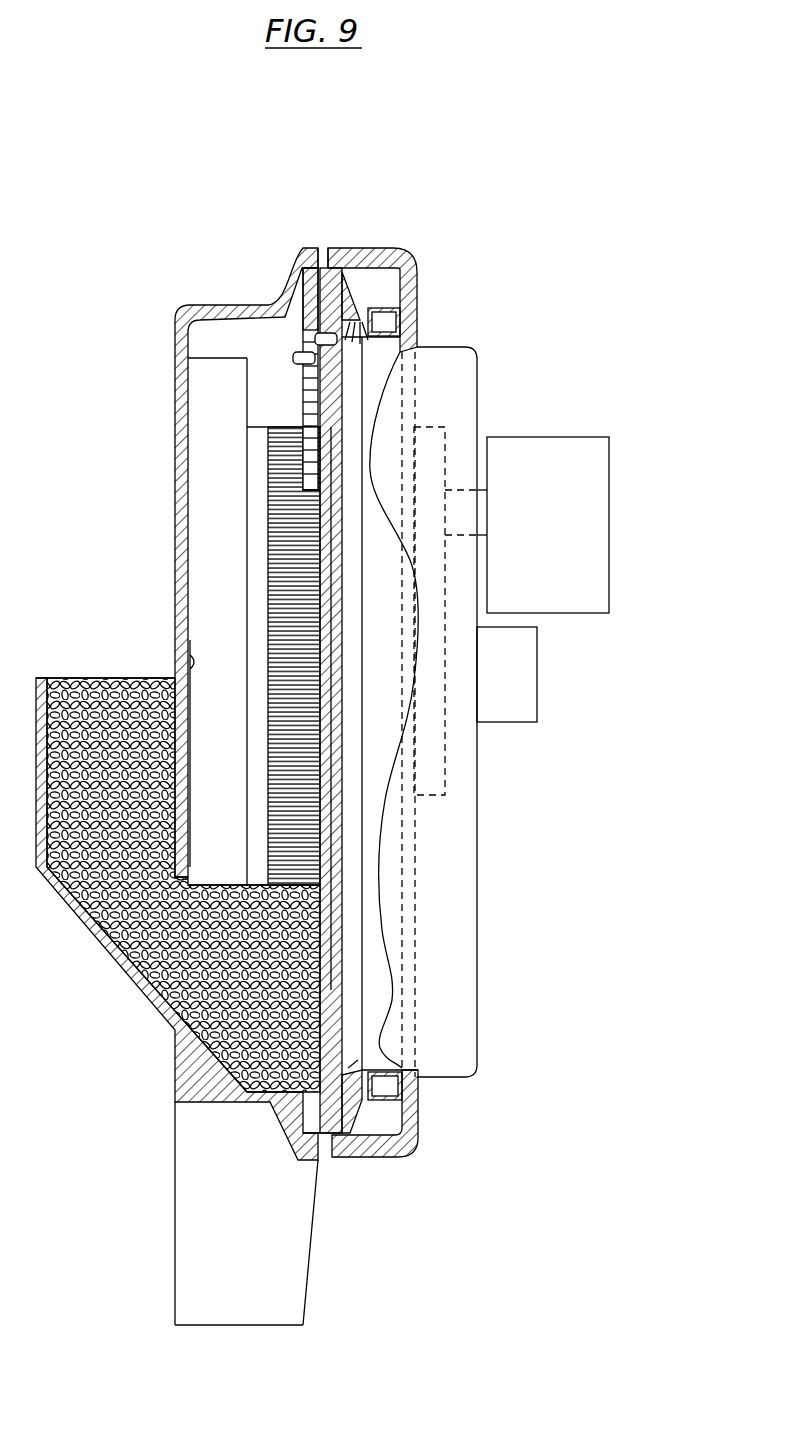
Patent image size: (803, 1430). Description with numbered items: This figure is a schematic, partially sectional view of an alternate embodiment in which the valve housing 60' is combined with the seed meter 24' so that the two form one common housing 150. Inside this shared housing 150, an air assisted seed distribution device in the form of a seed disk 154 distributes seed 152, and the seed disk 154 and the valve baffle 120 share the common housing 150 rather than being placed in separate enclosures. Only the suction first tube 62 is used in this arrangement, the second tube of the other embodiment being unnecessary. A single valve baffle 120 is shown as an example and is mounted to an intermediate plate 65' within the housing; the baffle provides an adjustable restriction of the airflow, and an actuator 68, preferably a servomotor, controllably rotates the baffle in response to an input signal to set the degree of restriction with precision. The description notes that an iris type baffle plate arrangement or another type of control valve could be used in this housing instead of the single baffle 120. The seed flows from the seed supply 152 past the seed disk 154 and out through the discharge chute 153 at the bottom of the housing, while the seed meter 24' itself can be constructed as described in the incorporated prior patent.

The housing 150 is at (386, 228).
The seed meter 24' is at (178, 684).
The valve housing 60' is at (514, 645).
The valve baffle 120 is at (447, 427).
The seed disk 154 is at (303, 472).
The actuator 68 is at (598, 487).
The seed 152 is at (115, 678).
The first tube 62 is at (527, 665).
The intermediate plate 65' is at (516, 710).
The discharge chute 153 is at (300, 1220).